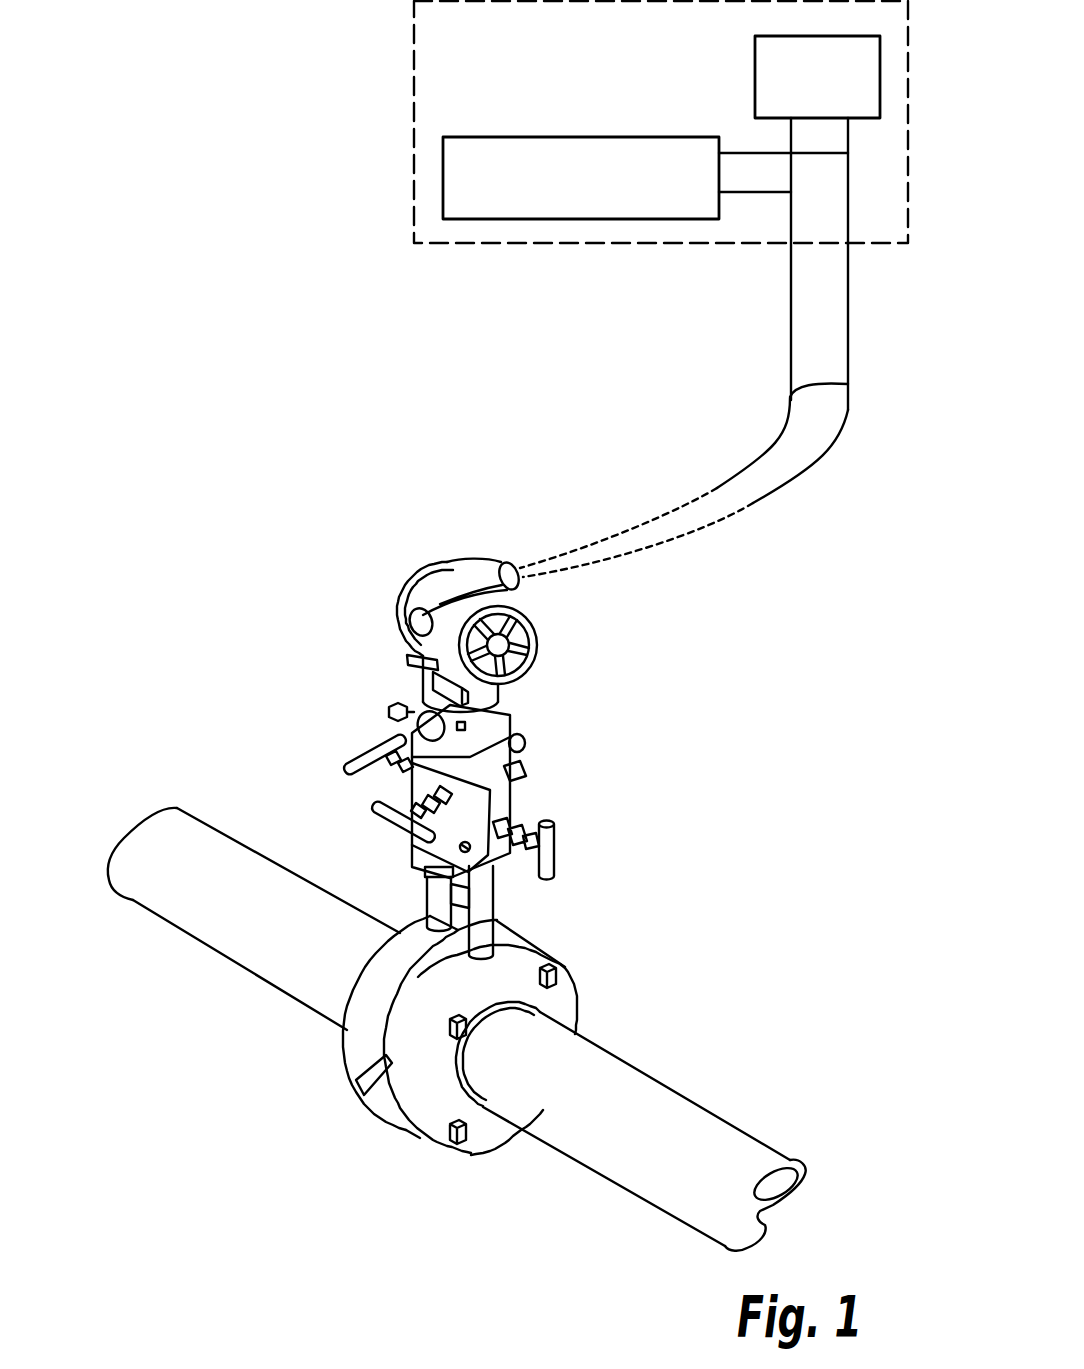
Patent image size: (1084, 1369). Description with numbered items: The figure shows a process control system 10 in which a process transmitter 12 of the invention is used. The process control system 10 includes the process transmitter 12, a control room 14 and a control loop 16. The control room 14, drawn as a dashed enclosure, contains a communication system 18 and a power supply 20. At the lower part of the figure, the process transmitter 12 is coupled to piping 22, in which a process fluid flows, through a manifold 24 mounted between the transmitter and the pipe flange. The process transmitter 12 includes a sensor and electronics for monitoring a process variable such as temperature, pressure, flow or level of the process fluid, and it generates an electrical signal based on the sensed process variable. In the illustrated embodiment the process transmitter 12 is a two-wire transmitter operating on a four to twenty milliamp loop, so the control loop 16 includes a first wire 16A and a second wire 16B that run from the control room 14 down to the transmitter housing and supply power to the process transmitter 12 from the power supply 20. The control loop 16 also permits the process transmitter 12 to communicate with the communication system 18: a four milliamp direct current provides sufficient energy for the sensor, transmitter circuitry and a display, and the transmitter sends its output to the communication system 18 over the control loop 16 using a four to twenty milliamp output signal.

The process control system 10 is at (282, 360).
The process transmitter 12 is at (417, 557).
The control room 14 is at (415, 130).
The control loop 16 is at (848, 384).
The first wire 16A is at (833, 440).
The second wire 16B is at (760, 457).
The communication system 18 is at (487, 137).
The power supply 20 is at (755, 78).
The piping 22 is at (620, 1060).
The manifold 24 is at (556, 800).